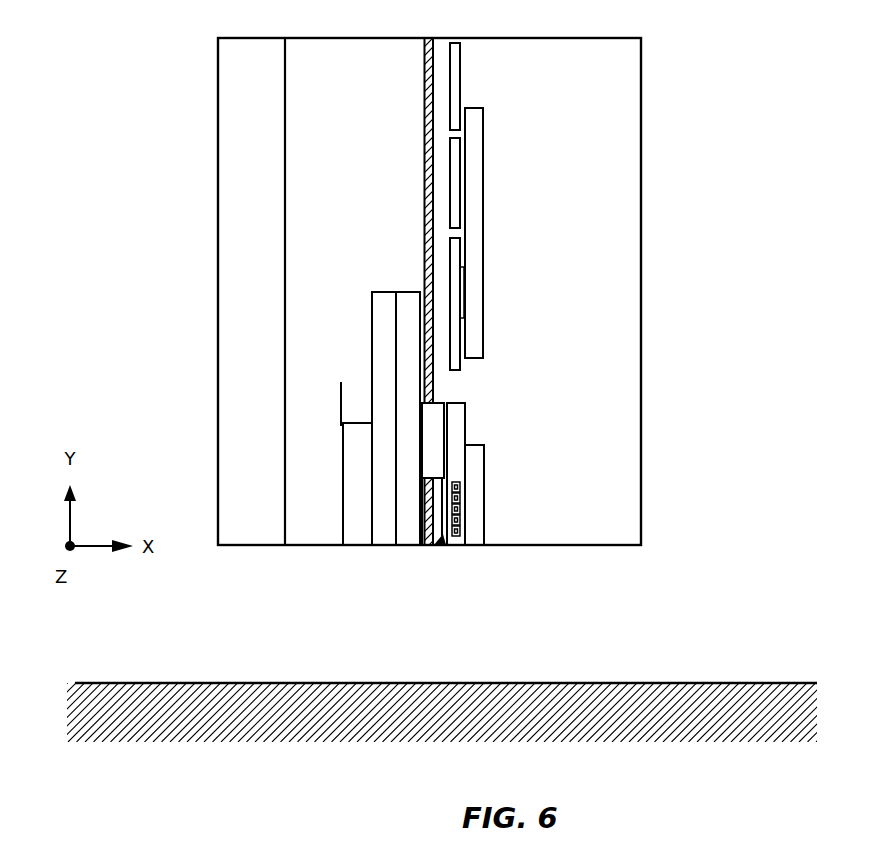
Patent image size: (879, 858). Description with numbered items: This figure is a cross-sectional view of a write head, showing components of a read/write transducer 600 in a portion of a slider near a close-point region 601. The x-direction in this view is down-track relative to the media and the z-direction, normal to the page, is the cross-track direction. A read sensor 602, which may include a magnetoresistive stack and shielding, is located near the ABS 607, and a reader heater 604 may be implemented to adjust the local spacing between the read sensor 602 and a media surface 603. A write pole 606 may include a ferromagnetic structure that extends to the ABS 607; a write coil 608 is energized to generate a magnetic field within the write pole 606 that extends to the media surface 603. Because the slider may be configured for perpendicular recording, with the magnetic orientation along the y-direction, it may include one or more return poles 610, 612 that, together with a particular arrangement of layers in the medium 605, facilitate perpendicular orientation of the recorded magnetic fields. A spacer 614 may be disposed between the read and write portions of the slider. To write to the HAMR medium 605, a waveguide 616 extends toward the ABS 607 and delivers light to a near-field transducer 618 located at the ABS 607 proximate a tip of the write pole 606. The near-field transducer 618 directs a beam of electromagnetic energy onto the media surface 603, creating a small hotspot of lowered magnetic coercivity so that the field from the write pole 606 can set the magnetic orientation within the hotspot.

The read/write transducer 600 is at (526, 354).
The close-point region 601 is at (490, 612).
The read sensor 602 is at (358, 533).
The media surface 603 is at (680, 683).
The reader heater 604 is at (341, 410).
The HAMR medium 605 is at (693, 730).
The write pole 606 is at (450, 437).
The ABS 607 is at (622, 545).
The write coil 608 is at (462, 482).
The return pole 610 is at (479, 527).
The return pole 612 is at (413, 292).
The spacer 614 is at (379, 319).
The waveguide 616 is at (425, 193).
The near-field transducer 618 is at (433, 546).